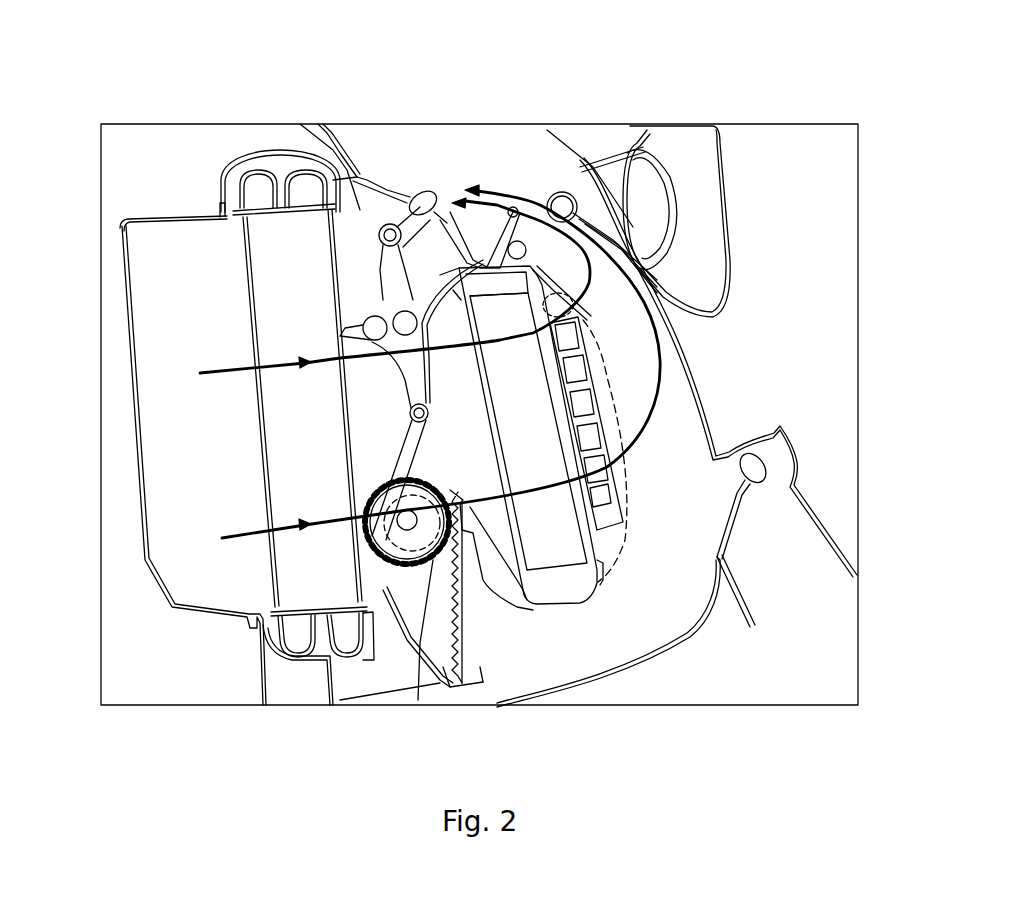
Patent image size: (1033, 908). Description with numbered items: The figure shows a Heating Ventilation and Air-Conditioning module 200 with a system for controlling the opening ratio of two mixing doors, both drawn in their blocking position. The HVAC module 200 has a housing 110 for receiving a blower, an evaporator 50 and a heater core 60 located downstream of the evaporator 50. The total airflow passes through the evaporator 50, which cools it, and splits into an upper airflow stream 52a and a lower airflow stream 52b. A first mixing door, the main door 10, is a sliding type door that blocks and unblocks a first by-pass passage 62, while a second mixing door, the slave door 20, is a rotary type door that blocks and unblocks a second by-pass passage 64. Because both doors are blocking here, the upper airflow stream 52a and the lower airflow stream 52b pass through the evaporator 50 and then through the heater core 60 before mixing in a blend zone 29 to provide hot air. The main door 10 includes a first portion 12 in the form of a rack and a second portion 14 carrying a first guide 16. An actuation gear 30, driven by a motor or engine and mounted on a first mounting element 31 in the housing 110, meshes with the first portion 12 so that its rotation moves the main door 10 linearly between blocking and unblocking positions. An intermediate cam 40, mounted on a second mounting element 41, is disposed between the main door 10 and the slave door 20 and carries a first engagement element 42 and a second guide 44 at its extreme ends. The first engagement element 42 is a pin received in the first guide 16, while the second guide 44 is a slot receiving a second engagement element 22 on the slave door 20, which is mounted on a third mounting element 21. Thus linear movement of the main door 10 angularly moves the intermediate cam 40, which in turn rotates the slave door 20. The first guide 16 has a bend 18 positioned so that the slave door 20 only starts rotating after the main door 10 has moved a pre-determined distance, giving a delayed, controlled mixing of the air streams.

The main door 10 is at (418, 700).
The first portion 12 is at (465, 613).
The second portion 14 is at (430, 467).
The first guide 16 is at (418, 448).
The bend 18 is at (590, 390).
The slave door 20 is at (380, 182).
The third mounting element 21 is at (445, 190).
The second engagement element 22 is at (413, 193).
The blend zone 29 is at (467, 180).
The actuation gear 30 is at (400, 548).
The first mounting element 31 is at (410, 590).
The intermediate cam 40 is at (385, 288).
The second mounting element 41 is at (393, 311).
The first engagement element 42 is at (412, 410).
The second guide 44 is at (467, 200).
The evaporator 50 is at (320, 318).
The upper airflow stream 52a is at (370, 298).
The lower airflow stream 52b is at (412, 374).
The heater core 60 is at (560, 517).
The first by-pass passage 62 is at (483, 593).
The second by-pass passage 64 is at (312, 128).
The housing 110 is at (687, 637).
The HVAC module 200 is at (706, 99).